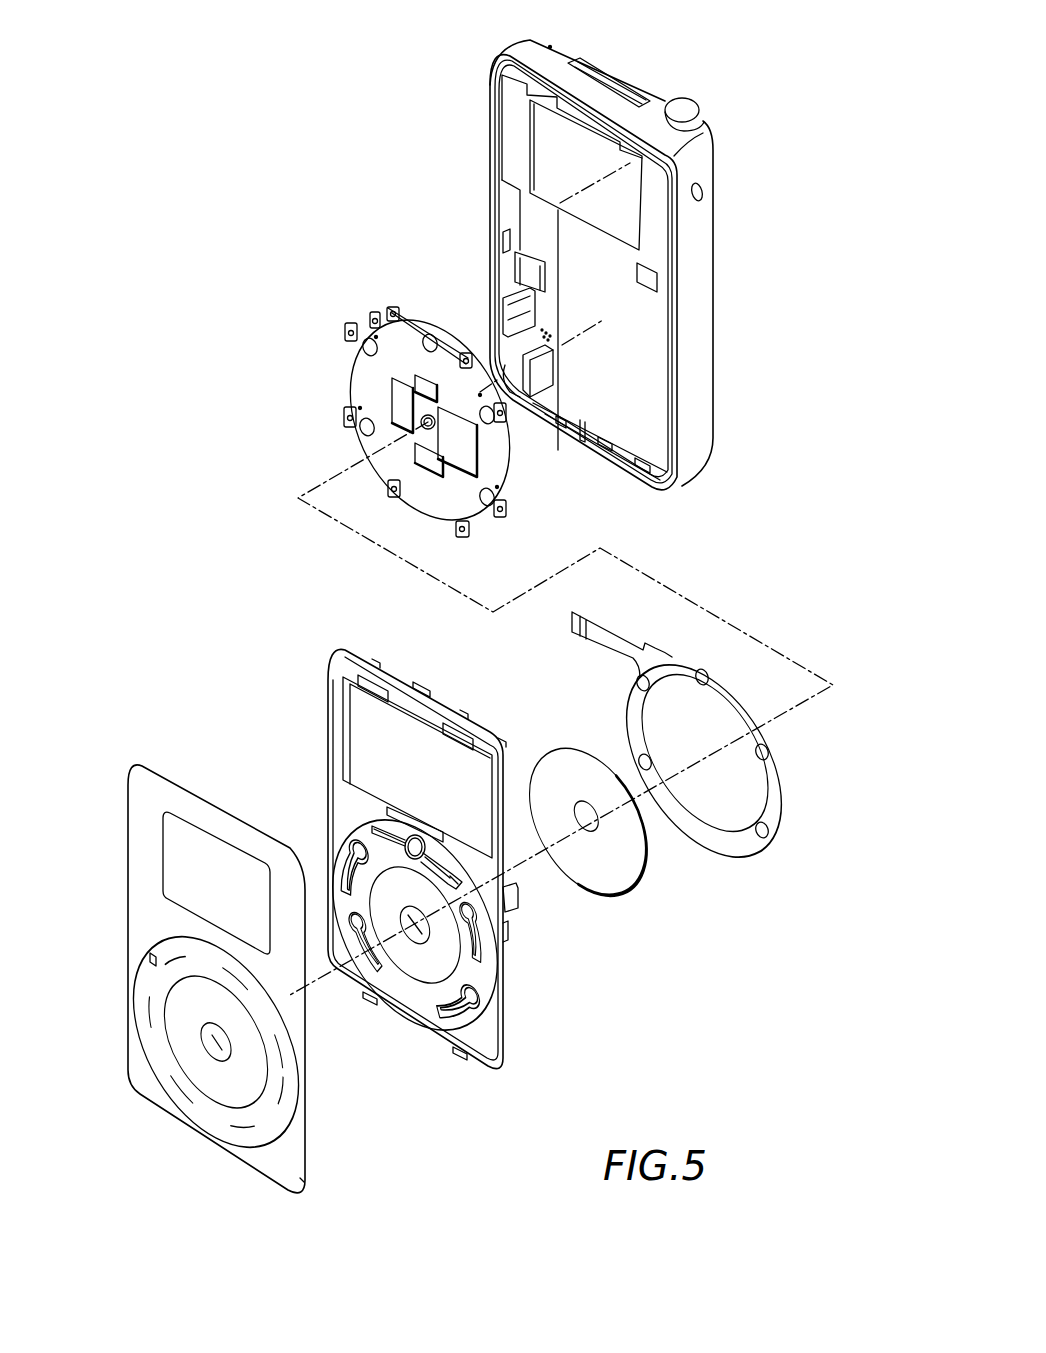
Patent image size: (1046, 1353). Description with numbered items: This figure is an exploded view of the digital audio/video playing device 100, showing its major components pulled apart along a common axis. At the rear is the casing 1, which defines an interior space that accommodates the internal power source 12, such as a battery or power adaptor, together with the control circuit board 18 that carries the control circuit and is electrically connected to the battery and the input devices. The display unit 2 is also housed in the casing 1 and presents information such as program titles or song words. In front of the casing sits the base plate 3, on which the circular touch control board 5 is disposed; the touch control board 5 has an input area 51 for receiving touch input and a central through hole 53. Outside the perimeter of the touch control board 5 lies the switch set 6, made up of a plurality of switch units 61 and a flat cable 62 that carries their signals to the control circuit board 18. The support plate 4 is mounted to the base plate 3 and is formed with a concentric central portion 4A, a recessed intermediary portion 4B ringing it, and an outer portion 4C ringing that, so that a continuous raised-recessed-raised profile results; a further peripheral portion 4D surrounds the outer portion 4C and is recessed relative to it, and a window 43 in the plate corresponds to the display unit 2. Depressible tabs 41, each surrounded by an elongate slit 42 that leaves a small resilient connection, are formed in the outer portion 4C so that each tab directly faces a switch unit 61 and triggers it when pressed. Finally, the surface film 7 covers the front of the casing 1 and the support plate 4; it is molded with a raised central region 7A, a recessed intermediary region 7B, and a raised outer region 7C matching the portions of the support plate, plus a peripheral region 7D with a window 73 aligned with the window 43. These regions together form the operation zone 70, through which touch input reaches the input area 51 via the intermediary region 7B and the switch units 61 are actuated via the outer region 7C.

The digital audio/video playing device 100 is at (408, 6).
The casing 1 is at (697, 303).
The display unit 2 is at (630, 180).
The internal power source 12 is at (647, 367).
The control circuit board 18 is at (540, 275).
The base plate 3 is at (362, 381).
The support plate 4 is at (540, 966).
The depressible tab 41 is at (410, 837).
The elongate slit 42 is at (427, 847).
The window 43 is at (360, 747).
The central portion 4A is at (415, 940).
The intermediary portion 4B is at (447, 960).
The outer portion 4C is at (492, 980).
The peripheral portion 4D is at (482, 1062).
The touch control board 5 is at (668, 856).
The input area 51 is at (627, 868).
The central through hole 53 is at (585, 810).
The switch set 6 is at (808, 815).
The switch unit 61 is at (702, 672).
The cable 62 is at (607, 637).
The surface film 7 is at (142, 834).
The operation zone 70 is at (128, 949).
The window 73 is at (199, 867).
The raised central region 7A is at (221, 1057).
The recessed intermediary region 7B is at (203, 1080).
The raised outer region 7C is at (150, 1007).
The peripheral region 7D is at (298, 1150).